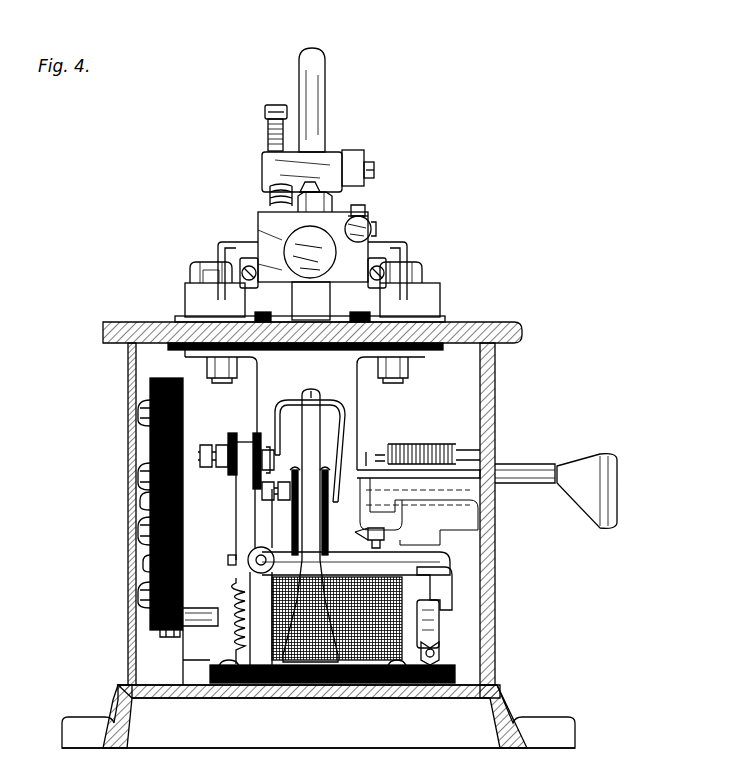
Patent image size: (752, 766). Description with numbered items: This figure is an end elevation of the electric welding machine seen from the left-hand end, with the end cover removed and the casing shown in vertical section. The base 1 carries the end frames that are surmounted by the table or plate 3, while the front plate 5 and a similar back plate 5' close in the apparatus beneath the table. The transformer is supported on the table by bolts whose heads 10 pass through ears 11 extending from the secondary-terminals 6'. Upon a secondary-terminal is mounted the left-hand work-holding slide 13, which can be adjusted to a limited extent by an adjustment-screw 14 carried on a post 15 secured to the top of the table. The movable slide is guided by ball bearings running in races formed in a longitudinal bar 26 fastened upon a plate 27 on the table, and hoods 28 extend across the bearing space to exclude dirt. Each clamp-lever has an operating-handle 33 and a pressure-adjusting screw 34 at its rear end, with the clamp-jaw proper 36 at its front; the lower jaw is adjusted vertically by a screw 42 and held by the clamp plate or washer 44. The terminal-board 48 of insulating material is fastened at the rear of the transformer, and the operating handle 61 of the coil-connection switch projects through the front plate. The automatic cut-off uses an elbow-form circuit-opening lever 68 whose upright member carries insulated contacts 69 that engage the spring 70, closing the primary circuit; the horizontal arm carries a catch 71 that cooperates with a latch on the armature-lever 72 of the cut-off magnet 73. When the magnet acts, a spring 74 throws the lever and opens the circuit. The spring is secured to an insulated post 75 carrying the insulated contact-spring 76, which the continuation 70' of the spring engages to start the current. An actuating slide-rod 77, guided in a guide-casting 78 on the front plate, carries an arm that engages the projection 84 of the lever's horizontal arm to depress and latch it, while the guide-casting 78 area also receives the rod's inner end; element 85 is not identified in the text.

The base 1 is at (512, 698).
The table or plate 3 is at (520, 326).
The front plate or cover 5 is at (502, 514).
The back plate 5' is at (116, 514).
The secondary-terminals 6' is at (305, 330).
The bolt heads 10 is at (223, 383).
The ears 11 is at (190, 358).
The work-holding slide 13 is at (313, 247).
The adjustment-screw 14 is at (298, 242).
The post 15 is at (311, 301).
The longitudinal bar 26 is at (230, 268).
The plate 27 is at (440, 312).
The hoods 28 is at (228, 243).
The operating-handle 33 is at (327, 92).
The pressure-adjusting screw 34 is at (266, 137).
The clamp-jaw 36 is at (365, 165).
The screw 42 is at (372, 230).
The clamp plate or washer 44 is at (370, 218).
The terminal-board 48 is at (150, 449).
The operating handle or pin 61 is at (525, 470).
The circuit-opening lever 68 is at (249, 530).
The insulated contacts 69 is at (272, 452).
The spring 70 is at (302, 445).
The continuation of spring 70' is at (373, 419).
The catch 71 is at (447, 590).
The armature-lever 72 is at (440, 638).
The cut-off magnet 73 is at (345, 580).
The spring 74 is at (228, 596).
The post 75 is at (332, 536).
The insulated contact-spring 76 is at (291, 494).
The actuating slide-rod 77 is at (540, 508).
The guide-casting 78 is at (440, 535).
The projection 84 is at (360, 556).
The screw 85 is at (380, 536).